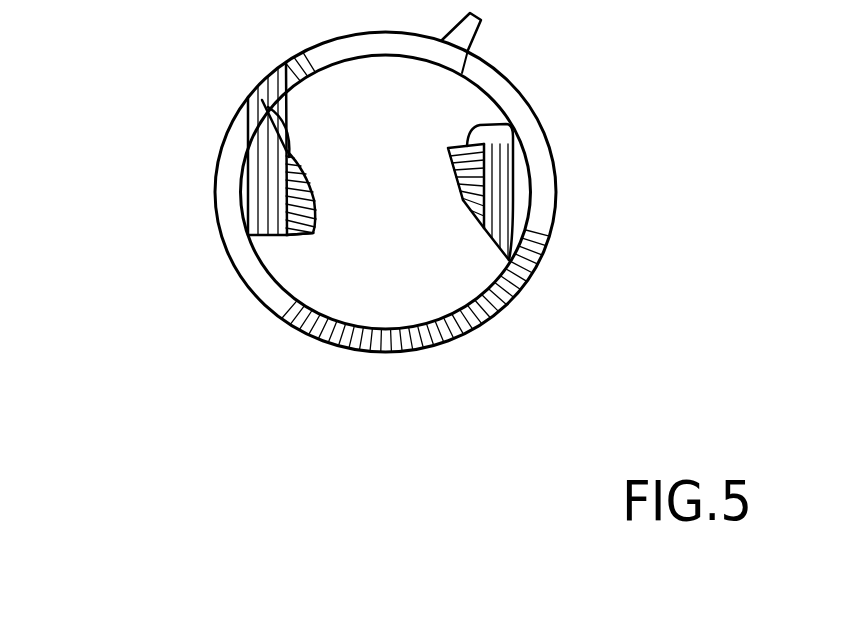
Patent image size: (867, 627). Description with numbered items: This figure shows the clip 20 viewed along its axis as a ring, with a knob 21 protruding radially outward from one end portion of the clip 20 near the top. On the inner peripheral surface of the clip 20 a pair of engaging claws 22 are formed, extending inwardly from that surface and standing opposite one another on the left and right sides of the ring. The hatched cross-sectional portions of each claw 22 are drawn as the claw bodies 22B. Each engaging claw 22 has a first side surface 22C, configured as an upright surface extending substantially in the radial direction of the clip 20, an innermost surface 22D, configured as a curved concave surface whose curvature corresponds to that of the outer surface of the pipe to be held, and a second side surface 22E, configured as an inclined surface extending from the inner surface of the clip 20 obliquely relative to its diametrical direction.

The clip 20 is at (216, 177).
The knob 21 is at (477, 31).
The engaging claws 22 is at (375, 269).
The clip band portion 22B is at (255, 210).
The first side surface 22C is at (279, 243).
The innermost surface 22D is at (461, 193).
The second side surface 22E is at (252, 91).